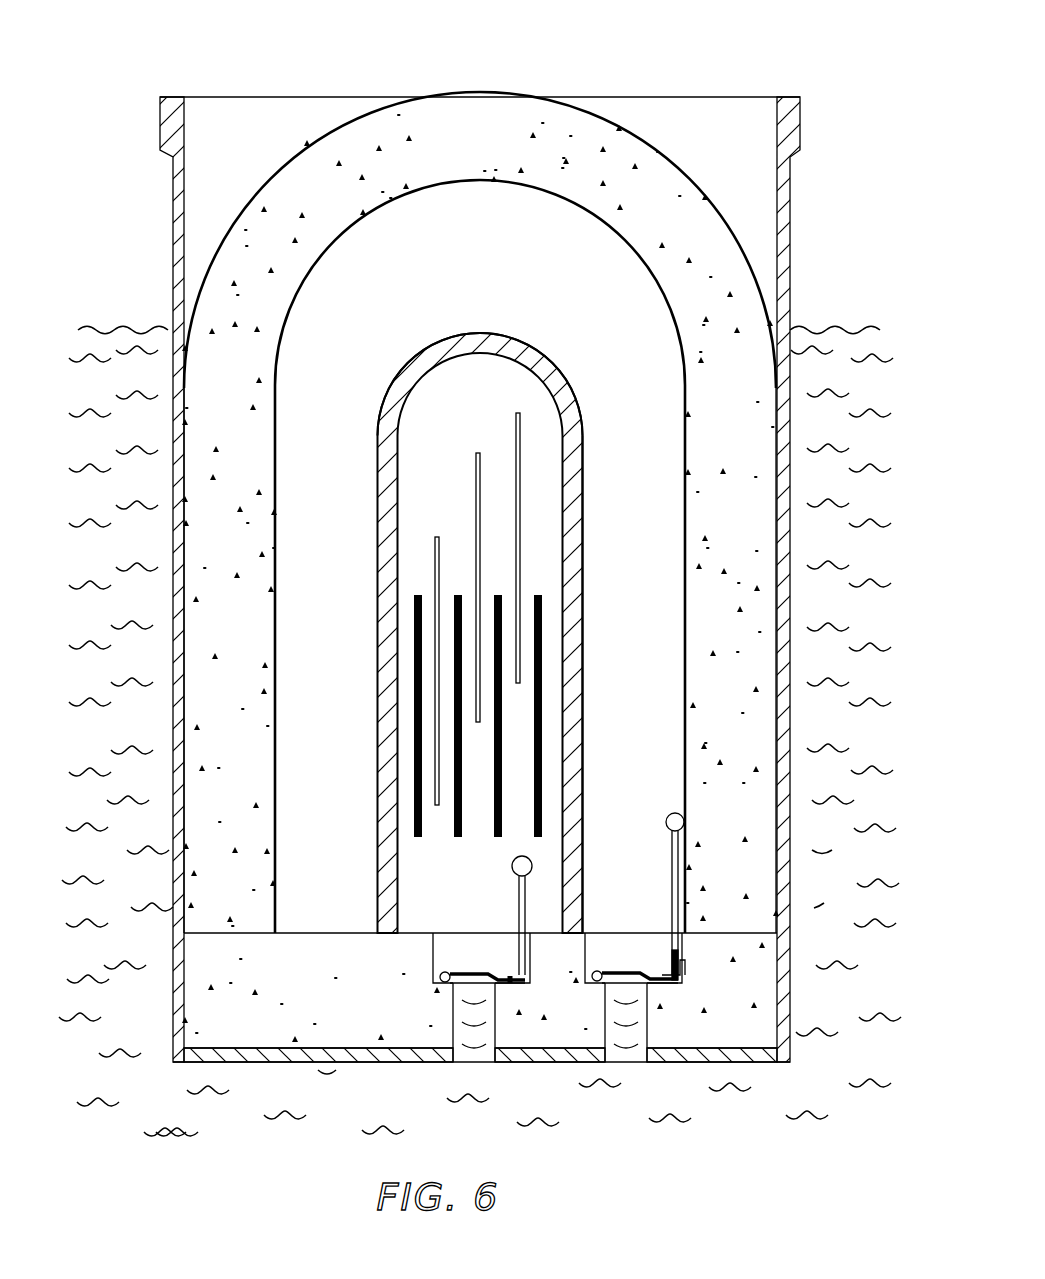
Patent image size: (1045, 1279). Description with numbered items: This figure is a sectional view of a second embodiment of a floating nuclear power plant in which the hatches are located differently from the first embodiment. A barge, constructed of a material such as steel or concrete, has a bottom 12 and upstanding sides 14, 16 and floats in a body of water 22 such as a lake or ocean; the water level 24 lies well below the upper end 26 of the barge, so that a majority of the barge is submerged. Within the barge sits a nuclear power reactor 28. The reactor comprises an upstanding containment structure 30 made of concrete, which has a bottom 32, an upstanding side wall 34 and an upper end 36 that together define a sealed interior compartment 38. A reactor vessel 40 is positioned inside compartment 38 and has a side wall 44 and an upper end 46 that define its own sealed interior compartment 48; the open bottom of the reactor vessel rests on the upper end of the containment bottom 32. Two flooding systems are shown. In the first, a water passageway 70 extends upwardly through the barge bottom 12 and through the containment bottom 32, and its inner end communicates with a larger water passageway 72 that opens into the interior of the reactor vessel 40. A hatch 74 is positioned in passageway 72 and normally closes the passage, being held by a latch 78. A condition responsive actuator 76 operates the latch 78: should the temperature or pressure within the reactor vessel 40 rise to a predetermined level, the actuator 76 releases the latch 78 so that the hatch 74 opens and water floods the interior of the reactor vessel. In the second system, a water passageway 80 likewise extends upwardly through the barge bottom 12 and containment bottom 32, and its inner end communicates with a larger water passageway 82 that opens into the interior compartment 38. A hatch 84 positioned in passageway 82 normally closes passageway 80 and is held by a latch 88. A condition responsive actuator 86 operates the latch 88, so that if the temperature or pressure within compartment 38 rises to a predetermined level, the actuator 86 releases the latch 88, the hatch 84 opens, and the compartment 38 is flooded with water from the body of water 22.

The bottom 12 is at (282, 1058).
The upstanding side 14 is at (172, 215).
The upstanding side 16 is at (782, 215).
The body of water 22 is at (863, 388).
The water level 24 is at (86, 330).
The upper end 26 is at (298, 97).
The nuclear power reactor 28 is at (670, 118).
The containment structure 30 is at (712, 180).
The bottom 32 is at (480, 1050).
The upstanding side wall 34 is at (258, 578).
The upper end 36 is at (478, 115).
The sealed interior compartment 38 is at (455, 264).
The reactor vessel 40 is at (590, 420).
The side wall 44 is at (583, 650).
The upper end 46 is at (462, 340).
The sealed interior compartment 48 is at (455, 409).
The water passageway 70 is at (473, 1045).
The larger water passageway 72 is at (462, 945).
The hatch 74 is at (485, 952).
The condition responsive actuator 76 is at (512, 862).
The latch 78 is at (510, 985).
The water passageway 80 is at (678, 1060).
The larger water passageway 82 is at (643, 940).
The hatch 84 is at (598, 985).
The condition responsive actuator 86 is at (662, 818).
The latch 88 is at (683, 965).